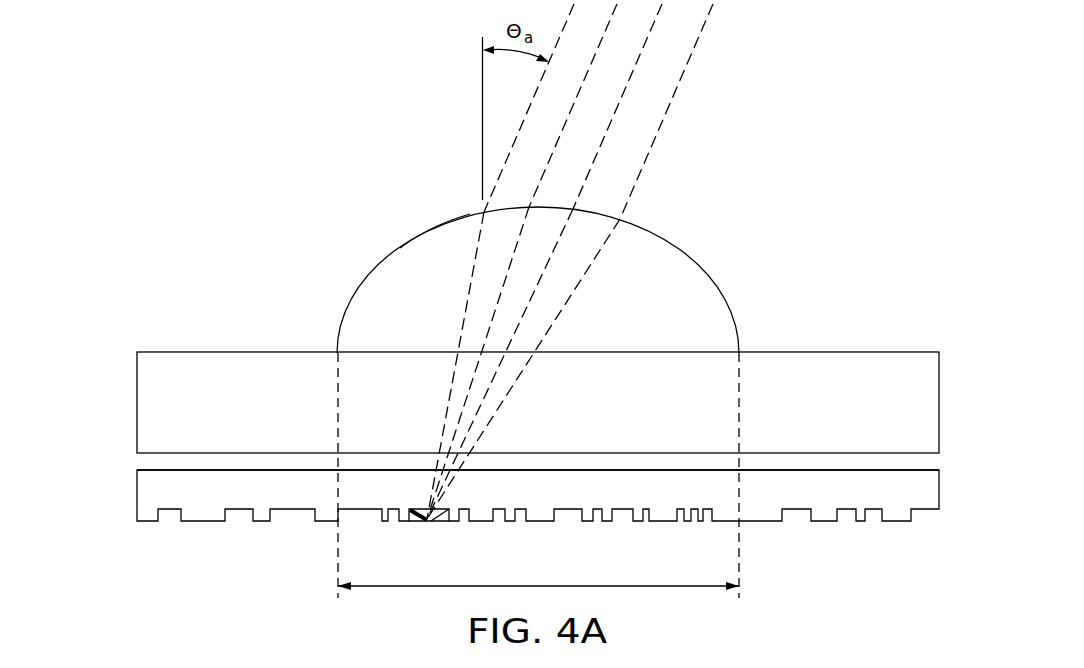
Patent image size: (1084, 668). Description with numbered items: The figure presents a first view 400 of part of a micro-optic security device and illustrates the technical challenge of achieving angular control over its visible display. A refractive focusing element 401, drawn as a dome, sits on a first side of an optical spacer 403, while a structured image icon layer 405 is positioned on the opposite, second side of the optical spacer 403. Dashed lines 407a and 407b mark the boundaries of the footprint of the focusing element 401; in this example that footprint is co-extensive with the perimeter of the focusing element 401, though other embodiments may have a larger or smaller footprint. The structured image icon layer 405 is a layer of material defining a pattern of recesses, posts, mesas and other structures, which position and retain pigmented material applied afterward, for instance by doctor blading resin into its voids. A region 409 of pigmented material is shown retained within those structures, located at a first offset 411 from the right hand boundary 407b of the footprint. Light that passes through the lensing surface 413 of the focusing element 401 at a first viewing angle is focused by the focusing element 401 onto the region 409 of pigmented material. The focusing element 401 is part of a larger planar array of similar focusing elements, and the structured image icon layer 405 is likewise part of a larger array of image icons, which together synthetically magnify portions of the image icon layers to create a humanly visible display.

The first view 400 is at (315, 61).
The refractive focusing element 401 is at (690, 271).
The optical spacer 403 is at (146, 401).
The structured image icon layer 405 is at (146, 496).
The dashed line 407a is at (338, 557).
The dashed line 407b is at (739, 557).
The region of pigmented material 409 is at (431, 521).
The first offset 411 is at (584, 586).
The lensing surface 413 is at (423, 233).